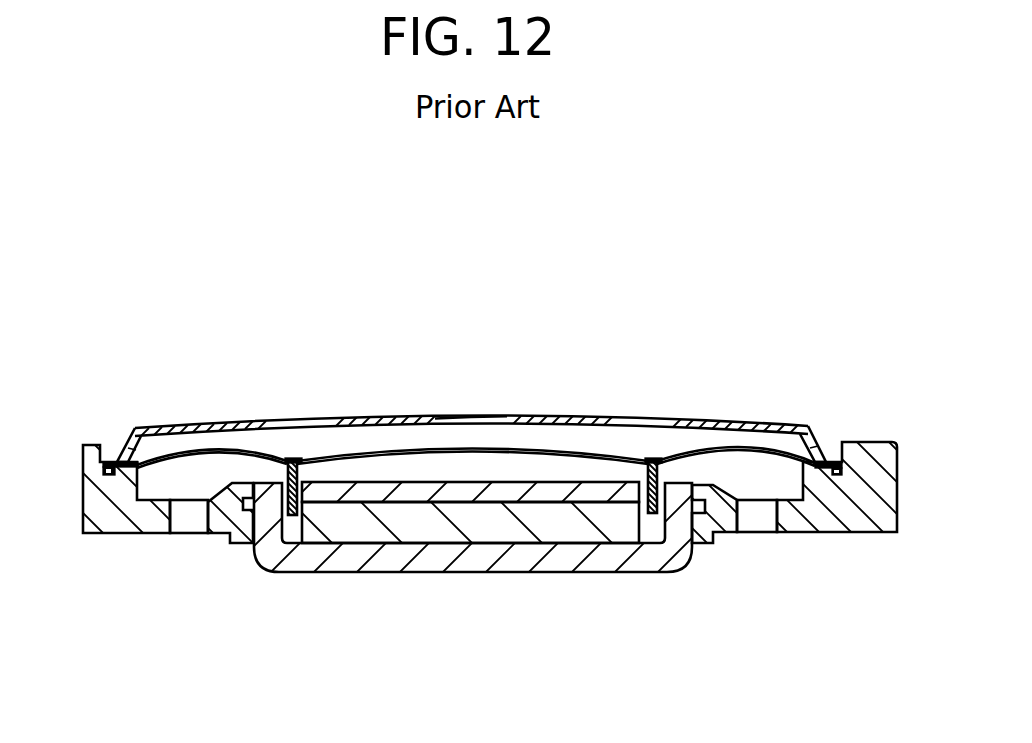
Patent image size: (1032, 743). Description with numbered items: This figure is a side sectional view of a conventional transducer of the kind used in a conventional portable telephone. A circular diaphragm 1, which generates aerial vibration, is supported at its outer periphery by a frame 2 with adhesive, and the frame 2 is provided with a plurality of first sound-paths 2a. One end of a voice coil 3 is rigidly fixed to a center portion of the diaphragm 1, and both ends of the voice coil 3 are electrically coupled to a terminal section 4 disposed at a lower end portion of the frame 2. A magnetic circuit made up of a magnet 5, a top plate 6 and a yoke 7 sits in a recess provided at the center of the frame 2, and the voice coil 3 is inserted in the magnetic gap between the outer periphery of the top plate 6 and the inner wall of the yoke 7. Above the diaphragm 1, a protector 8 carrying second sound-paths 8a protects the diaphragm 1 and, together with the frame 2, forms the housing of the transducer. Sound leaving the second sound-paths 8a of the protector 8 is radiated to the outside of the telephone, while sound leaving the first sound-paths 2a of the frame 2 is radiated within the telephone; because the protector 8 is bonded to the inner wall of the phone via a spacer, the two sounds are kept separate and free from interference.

The diaphragm 1 is at (735, 450).
The frame 2 is at (132, 532).
The first sound-paths 2a is at (182, 523).
The voice coil 3 is at (654, 460).
The terminal section 4 is at (857, 532).
The magnet 5 is at (522, 528).
The top plate 6 is at (403, 503).
The yoke 7 is at (647, 560).
The protector 8 is at (208, 423).
The second sound-paths 8a is at (467, 418).